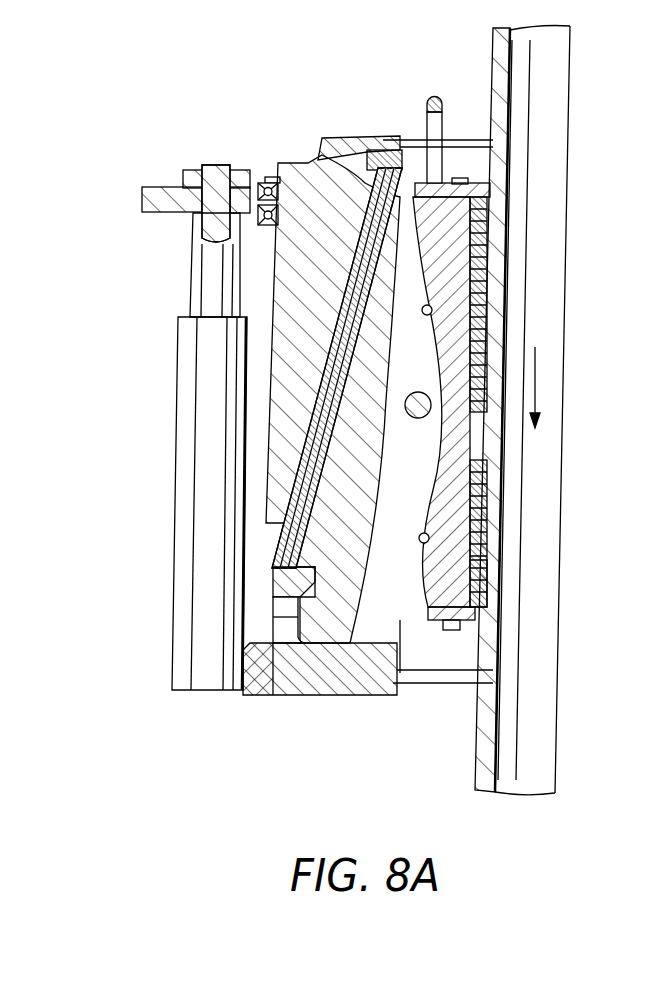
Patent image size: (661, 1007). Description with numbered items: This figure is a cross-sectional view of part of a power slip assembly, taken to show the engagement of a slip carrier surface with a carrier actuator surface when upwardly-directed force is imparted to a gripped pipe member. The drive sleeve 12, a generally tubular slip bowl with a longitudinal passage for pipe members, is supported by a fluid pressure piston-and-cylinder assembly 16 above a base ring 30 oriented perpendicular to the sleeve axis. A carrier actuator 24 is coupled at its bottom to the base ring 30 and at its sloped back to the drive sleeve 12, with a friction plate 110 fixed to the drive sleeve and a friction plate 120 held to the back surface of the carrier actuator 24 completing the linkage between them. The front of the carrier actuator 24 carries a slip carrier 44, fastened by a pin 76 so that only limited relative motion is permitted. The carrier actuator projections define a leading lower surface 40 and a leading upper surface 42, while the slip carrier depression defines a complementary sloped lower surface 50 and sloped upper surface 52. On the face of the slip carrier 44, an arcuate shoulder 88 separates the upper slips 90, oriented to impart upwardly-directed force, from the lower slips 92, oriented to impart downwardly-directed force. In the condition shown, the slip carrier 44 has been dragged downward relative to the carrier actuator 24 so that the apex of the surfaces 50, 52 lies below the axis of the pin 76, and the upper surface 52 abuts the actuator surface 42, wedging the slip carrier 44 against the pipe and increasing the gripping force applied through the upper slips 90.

The drive sleeve 12 is at (272, 298).
The fluid pressure piston-and-cylinder assembly 16 is at (212, 413).
The carrier actuator 24 is at (315, 613).
The base ring 30 is at (333, 682).
The leading lower surface 40 is at (400, 627).
The leading upper surface 42 is at (433, 342).
The slip carrier 44 is at (477, 567).
The sloped lower surface 50 is at (440, 528).
The sloped upper surface 52 is at (440, 302).
The pin 76 is at (431, 398).
The shoulder 88 is at (483, 440).
The slips 90 is at (488, 262).
The slips 92 is at (480, 495).
The friction plate 110 is at (322, 156).
The friction plate 120 is at (292, 544).